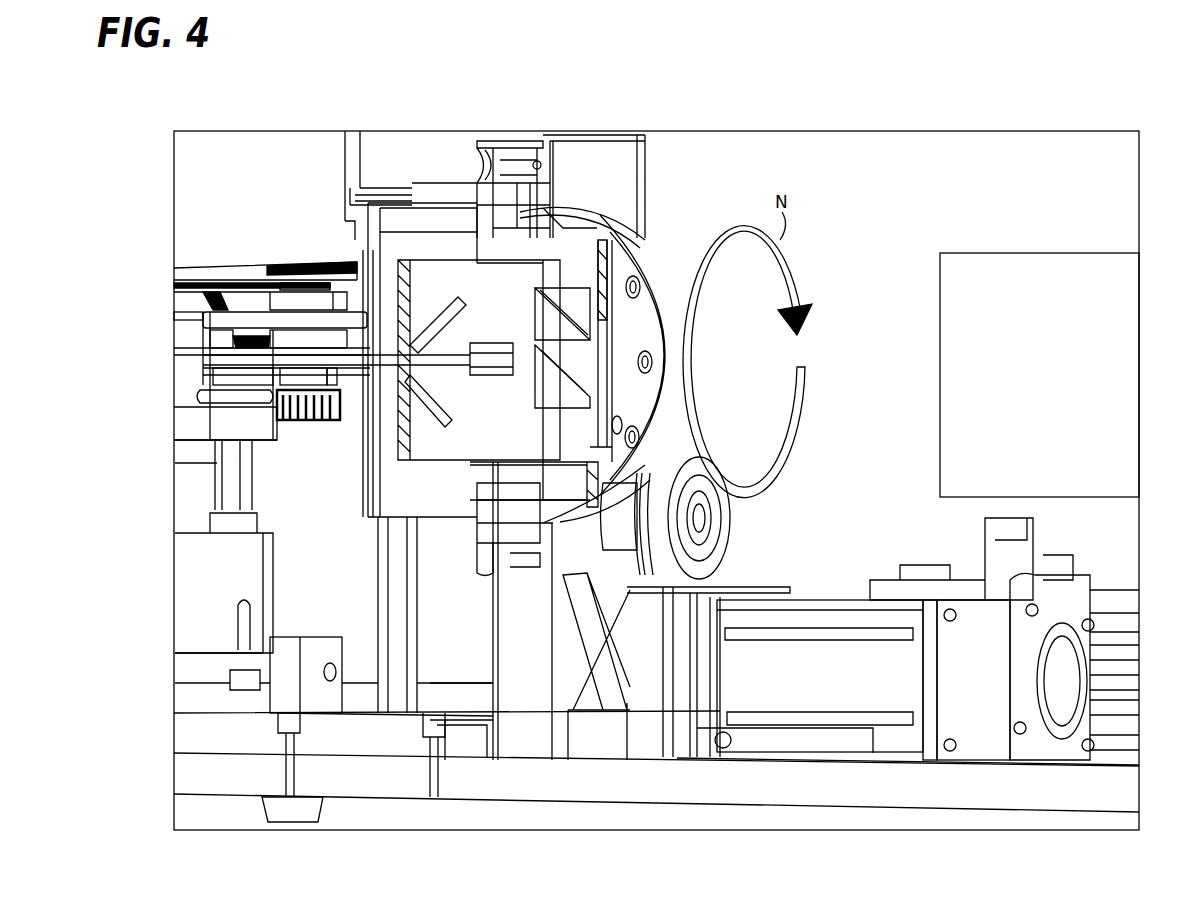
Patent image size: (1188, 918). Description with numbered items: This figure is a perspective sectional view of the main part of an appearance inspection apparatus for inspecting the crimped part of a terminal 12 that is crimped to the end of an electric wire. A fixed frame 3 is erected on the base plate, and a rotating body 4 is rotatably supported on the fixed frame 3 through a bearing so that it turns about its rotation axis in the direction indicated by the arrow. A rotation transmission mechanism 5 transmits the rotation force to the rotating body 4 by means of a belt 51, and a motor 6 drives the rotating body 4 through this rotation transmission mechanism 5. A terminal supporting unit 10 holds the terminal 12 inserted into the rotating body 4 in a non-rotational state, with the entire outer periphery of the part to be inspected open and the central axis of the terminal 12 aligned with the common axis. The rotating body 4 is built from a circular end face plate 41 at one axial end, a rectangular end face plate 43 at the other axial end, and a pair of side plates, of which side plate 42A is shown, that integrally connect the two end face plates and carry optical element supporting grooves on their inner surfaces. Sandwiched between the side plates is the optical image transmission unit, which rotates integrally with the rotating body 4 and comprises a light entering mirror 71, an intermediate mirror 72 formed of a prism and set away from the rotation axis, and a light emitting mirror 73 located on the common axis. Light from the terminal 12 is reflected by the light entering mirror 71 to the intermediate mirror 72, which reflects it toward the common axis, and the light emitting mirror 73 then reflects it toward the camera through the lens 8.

The fixed frame 3 is at (523, 140).
The rotating body 4 is at (660, 275).
The rotation transmission mechanism 5 is at (643, 578).
The motor 6 is at (778, 578).
The lens 8 is at (1038, 345).
The terminal supporting unit 10 is at (300, 428).
The terminal 12 is at (487, 358).
The circular end face plate 41 is at (620, 240).
The side plate 42A is at (510, 300).
The rectangular end face plate 43 is at (390, 285).
The belt 51 is at (593, 633).
The light entering mirror 71 is at (430, 305).
The intermediate mirror 72 is at (578, 330).
The light emitting mirror 73 is at (552, 387).